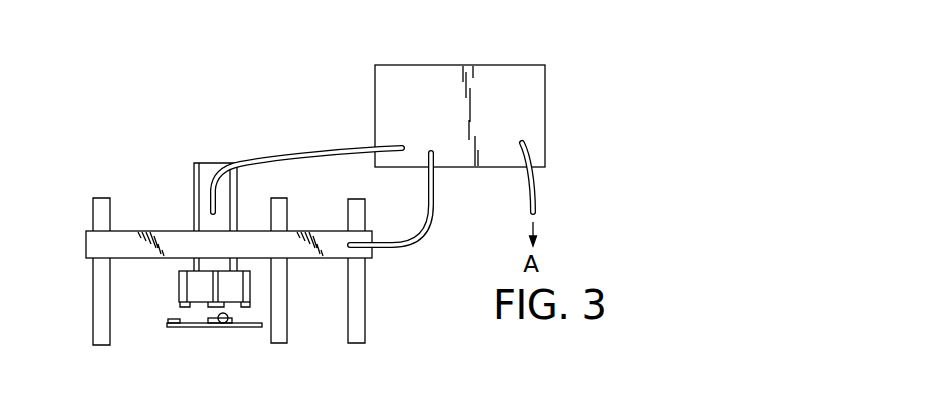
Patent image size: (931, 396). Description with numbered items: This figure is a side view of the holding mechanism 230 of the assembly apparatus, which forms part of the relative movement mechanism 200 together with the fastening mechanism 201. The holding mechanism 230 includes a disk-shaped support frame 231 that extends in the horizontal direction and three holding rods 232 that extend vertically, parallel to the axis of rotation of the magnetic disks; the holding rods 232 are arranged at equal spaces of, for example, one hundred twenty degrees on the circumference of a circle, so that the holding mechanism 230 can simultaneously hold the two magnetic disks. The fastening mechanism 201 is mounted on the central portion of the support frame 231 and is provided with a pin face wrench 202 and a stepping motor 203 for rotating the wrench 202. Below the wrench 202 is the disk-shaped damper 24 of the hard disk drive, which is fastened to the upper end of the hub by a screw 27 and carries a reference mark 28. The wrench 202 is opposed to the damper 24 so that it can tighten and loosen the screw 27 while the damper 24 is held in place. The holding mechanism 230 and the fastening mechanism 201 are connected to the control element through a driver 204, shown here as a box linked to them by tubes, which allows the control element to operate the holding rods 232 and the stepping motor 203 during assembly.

The damper 24 is at (185, 328).
The screw 27 is at (227, 330).
The reference mark 28 is at (177, 319).
The relative movement mechanism 200 is at (291, 154).
The fastening mechanism 201 is at (207, 163).
The pin face wrench 202 is at (253, 282).
The stepping motor 203 is at (222, 305).
The driver 204 is at (545, 90).
The holding mechanism 230 is at (375, 254).
The support frame 231 is at (86, 247).
The holding rods 232 is at (96, 325).